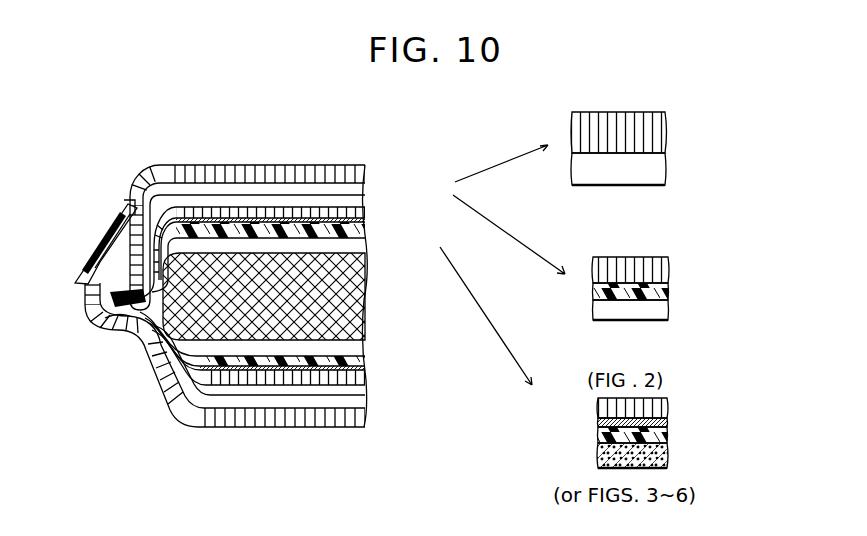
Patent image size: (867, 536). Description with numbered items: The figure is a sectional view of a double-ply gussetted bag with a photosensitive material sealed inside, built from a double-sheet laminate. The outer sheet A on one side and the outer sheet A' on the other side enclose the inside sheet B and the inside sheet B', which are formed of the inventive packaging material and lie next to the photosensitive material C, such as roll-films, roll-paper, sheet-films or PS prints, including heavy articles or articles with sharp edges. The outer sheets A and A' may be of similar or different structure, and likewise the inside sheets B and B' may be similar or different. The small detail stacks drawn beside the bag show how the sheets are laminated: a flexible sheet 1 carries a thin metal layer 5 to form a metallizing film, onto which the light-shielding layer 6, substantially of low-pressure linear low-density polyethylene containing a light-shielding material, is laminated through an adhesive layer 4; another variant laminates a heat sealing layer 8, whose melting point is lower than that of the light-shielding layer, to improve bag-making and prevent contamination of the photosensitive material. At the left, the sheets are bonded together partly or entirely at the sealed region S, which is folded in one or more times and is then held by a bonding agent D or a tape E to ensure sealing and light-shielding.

The flexible sheet 1 is at (657, 130).
The adhesive layer 4 is at (660, 292).
The thin metal layer 5 is at (598, 422).
The light-shielding layer 6 is at (598, 458).
The heat sealing layer 8 is at (662, 170).
The outer sheet A is at (282, 236).
The inside sheet B is at (272, 257).
The photosensitive material C is at (352, 302).
The inside sheet B' is at (290, 349).
The outer sheet A' is at (263, 355).
The sealed region S is at (108, 336).
The bonding agent D is at (100, 260).
The tape E is at (106, 243).